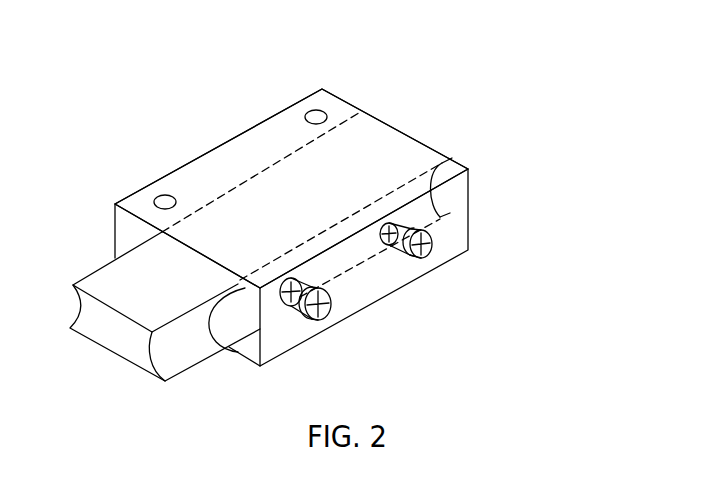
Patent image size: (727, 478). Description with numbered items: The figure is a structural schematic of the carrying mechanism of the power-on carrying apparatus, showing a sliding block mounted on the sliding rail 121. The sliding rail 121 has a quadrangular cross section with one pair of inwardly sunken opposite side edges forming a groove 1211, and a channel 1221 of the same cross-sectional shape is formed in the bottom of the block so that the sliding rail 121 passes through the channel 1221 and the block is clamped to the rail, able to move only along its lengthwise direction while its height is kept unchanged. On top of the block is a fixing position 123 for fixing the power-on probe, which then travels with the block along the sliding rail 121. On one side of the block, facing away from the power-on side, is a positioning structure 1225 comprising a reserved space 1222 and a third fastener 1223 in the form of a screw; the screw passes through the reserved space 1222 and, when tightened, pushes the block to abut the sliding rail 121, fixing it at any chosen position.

The sliding rail 121 is at (197, 365).
The channel 1221 is at (377, 155).
The fixing position 123 is at (307, 111).
The groove 1211 is at (431, 185).
The reserved space 1222 is at (440, 220).
The third fastener 1223 is at (442, 242).
The positioning structure 1225 is at (451, 237).